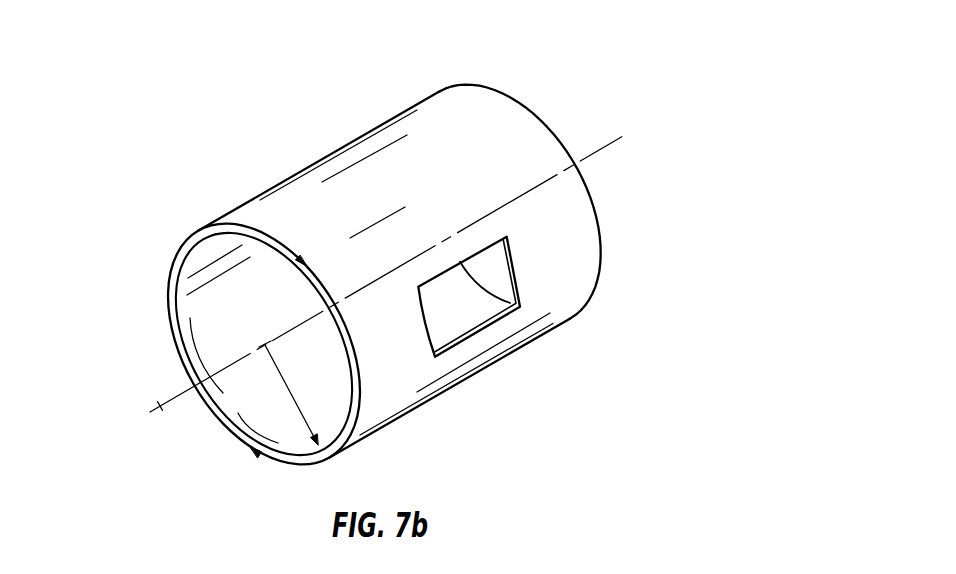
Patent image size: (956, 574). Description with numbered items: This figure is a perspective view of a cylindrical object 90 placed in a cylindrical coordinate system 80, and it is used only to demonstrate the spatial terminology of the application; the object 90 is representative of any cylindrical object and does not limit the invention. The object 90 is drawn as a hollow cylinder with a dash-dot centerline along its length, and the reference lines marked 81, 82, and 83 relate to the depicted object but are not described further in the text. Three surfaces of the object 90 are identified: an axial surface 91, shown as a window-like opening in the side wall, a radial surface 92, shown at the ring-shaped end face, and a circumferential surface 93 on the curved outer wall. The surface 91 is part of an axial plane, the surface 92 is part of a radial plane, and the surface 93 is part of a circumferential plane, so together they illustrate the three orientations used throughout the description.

The cylindrical coordinate system 80 is at (352, 257).
The longitudinal axis 81 is at (160, 406).
The inner bore surface 82 is at (297, 402).
The outer surface 83 is at (178, 251).
The cylindrical object 90 is at (412, 82).
The axial surface 91 is at (496, 320).
The radial surface 92 is at (275, 457).
The circumferential surface 93 is at (363, 176).